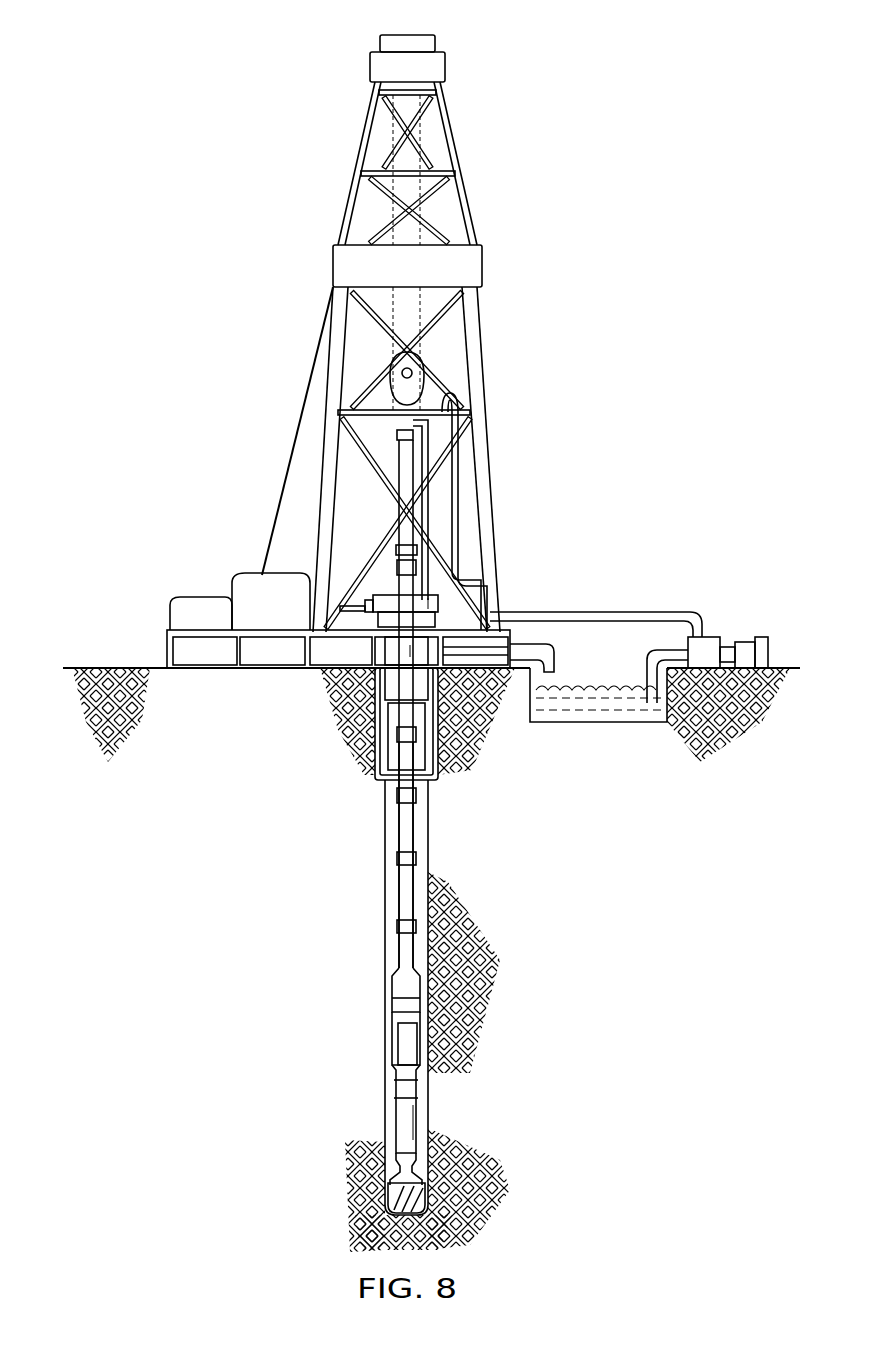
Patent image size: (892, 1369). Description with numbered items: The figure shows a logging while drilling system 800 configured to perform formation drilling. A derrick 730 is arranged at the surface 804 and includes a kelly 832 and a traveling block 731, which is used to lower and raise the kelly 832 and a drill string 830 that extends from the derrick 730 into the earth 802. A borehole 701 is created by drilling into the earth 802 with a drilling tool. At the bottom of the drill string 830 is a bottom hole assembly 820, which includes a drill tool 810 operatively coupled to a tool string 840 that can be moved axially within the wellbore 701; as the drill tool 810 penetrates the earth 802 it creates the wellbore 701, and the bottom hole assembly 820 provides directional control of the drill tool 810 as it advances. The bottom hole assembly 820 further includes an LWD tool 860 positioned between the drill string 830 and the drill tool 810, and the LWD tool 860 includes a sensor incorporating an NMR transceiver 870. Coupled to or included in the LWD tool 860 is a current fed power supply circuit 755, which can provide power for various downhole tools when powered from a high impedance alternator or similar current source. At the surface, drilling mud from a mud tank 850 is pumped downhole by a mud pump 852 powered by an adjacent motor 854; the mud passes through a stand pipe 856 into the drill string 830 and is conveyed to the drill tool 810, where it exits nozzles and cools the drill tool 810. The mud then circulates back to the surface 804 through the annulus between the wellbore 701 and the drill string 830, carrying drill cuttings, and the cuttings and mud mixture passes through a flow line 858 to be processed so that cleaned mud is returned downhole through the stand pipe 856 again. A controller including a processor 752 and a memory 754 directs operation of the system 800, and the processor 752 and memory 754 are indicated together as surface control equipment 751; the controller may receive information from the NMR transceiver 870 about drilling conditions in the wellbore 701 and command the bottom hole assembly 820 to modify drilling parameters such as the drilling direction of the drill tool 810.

The logging while drilling (LWD) system 800 is at (265, 95).
The derrick 730 is at (458, 160).
The traveling block 731 is at (392, 393).
The stand pipe 856 is at (472, 490).
The kelly 832 is at (398, 488).
The flow line 858 is at (534, 644).
The mud pump 852 is at (704, 637).
The motor 854 is at (750, 642).
The mud tank 850 is at (598, 698).
The surface 804 is at (100, 668).
The processor 752 is at (205, 655).
The memory 754 is at (275, 682).
The surface equipment 751 is at (337, 677).
The drill string 830 is at (415, 825).
The borehole 701 is at (430, 845).
The earth 802 is at (592, 930).
The current fed power supply circuit 755 is at (392, 1000).
The LWD tool 860 is at (370, 1045).
The NMR transceiver 870 is at (398, 1045).
The tool string 840 is at (402, 1118).
The drill tool 810 is at (426, 1183).
The bottom hole assembly (BHA) 820 is at (495, 1076).